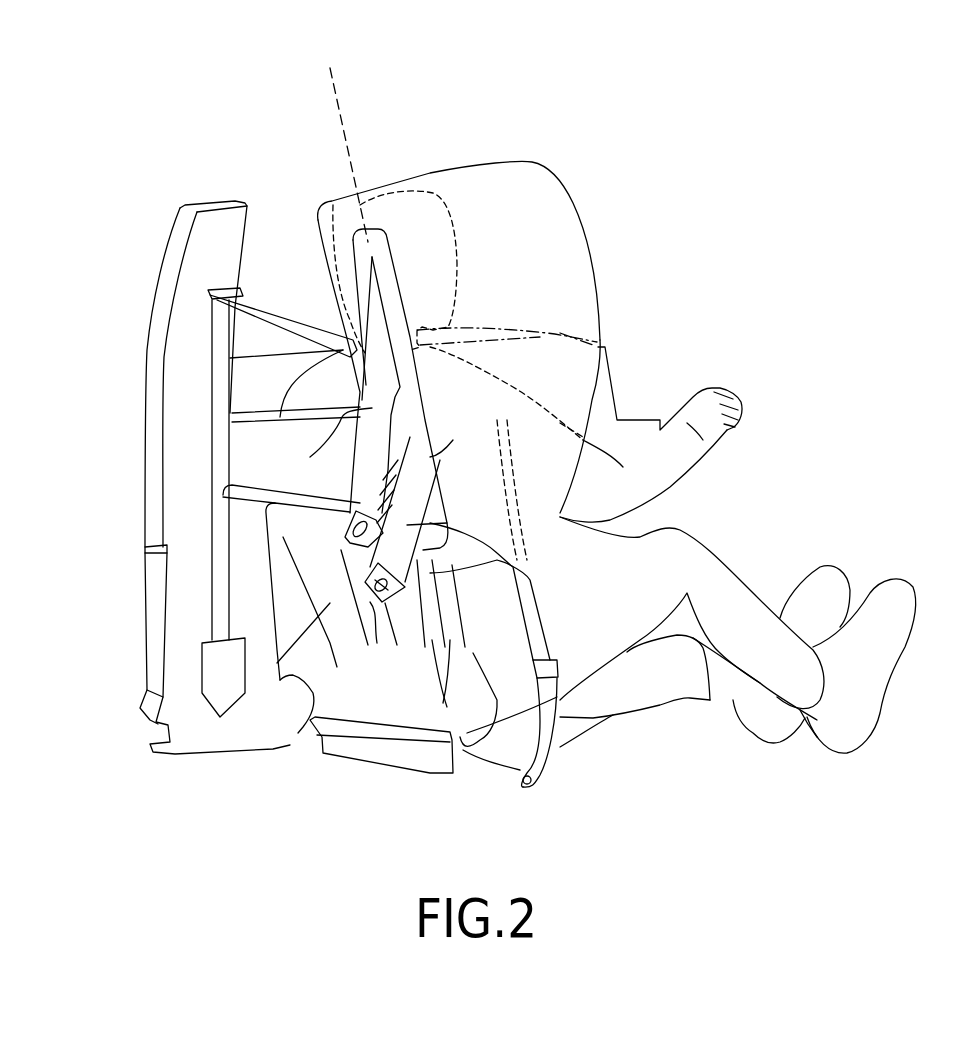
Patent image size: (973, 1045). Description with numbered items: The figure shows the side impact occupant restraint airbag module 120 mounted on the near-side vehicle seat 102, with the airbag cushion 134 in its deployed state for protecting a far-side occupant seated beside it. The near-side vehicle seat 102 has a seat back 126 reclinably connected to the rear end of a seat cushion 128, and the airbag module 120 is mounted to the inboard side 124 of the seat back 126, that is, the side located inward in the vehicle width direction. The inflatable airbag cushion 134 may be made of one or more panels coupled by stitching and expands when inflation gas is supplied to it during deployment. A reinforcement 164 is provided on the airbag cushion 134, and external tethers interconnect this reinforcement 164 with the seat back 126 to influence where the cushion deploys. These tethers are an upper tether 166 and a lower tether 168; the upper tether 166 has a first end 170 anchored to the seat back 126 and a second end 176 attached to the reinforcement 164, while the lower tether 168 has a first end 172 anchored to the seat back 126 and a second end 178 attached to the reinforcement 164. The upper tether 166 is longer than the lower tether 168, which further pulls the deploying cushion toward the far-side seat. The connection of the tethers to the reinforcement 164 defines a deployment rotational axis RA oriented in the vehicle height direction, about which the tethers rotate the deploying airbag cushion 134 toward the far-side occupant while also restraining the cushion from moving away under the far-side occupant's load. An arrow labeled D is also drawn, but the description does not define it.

The deployment rotational axis RA is at (339, 136).
The direction D is at (742, 518).
The near-side vehicle seat 102 is at (340, 793).
The airbag module 120 is at (655, 153).
The inboard side 124 is at (468, 752).
The seat back 126 is at (298, 718).
The seat cushion 128 is at (633, 680).
The airbag cushion 134 is at (568, 263).
The reinforcement 164 is at (410, 407).
The upper tether 166 is at (372, 408).
The lower tether 168 is at (538, 597).
The first end 170 is at (343, 530).
The first end 172 is at (368, 590).
The second end 176 is at (385, 312).
The second end 178 is at (453, 440).